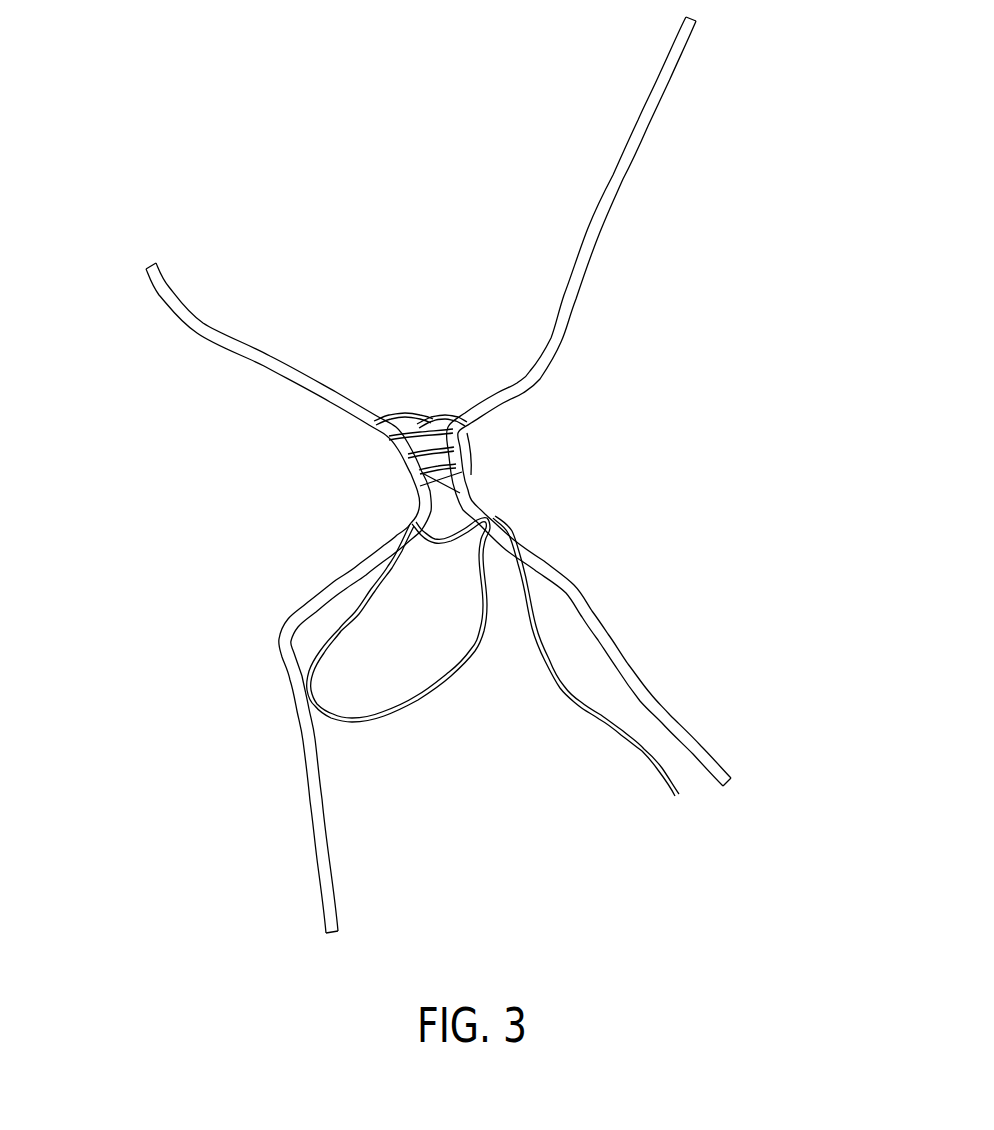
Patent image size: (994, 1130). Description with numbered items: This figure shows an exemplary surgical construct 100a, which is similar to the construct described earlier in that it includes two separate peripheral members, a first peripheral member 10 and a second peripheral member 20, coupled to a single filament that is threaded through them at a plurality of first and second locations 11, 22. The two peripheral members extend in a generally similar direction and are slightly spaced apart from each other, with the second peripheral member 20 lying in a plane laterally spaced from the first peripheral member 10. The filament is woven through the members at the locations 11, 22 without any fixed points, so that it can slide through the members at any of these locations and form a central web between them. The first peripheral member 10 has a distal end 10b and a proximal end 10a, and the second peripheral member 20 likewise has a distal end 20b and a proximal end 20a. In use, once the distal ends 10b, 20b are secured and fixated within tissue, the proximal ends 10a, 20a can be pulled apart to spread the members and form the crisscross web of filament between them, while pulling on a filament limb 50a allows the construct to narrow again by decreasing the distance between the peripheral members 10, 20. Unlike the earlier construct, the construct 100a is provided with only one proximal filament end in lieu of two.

The surgical construct 100a is at (713, 82).
The first peripheral member 10 is at (195, 333).
The proximal end of first peripheral member 10a is at (310, 778).
The distal end of first peripheral member 10b is at (145, 275).
The first locations 11 is at (388, 447).
The second peripheral member 20 is at (630, 170).
The proximal end of second peripheral member 20a is at (660, 718).
The distal end of second peripheral member 20b is at (593, 250).
The second locations 22 is at (463, 437).
The limb of filament 50a is at (647, 753).